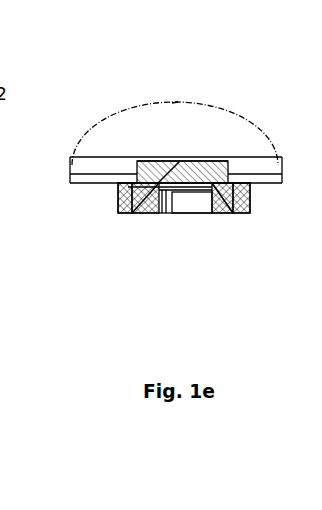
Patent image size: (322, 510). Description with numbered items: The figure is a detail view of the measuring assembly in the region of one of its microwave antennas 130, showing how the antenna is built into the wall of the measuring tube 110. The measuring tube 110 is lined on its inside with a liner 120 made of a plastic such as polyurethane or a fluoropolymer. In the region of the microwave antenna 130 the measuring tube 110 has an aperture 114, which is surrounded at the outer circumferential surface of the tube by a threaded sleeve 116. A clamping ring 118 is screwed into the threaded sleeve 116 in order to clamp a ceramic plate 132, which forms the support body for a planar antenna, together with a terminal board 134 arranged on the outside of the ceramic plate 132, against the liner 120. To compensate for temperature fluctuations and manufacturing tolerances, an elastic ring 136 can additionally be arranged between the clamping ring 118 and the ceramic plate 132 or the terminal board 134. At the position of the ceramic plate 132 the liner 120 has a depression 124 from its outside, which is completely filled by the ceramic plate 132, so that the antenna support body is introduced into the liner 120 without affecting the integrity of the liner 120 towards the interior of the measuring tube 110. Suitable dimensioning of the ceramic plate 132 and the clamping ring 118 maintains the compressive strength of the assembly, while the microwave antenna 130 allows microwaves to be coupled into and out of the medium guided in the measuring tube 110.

The measuring tube 110 is at (266, 184).
The aperture 114 is at (158, 157).
The threaded sleeve 116 is at (122, 213).
The clamping ring 118 is at (137, 213).
The liner 120 is at (245, 157).
The depression 124 is at (186, 157).
The microwave antenna 130 is at (180, 213).
The ceramic plate 132 is at (169, 157).
The terminal board 134 is at (155, 213).
The elastic ring 136 is at (236, 213).